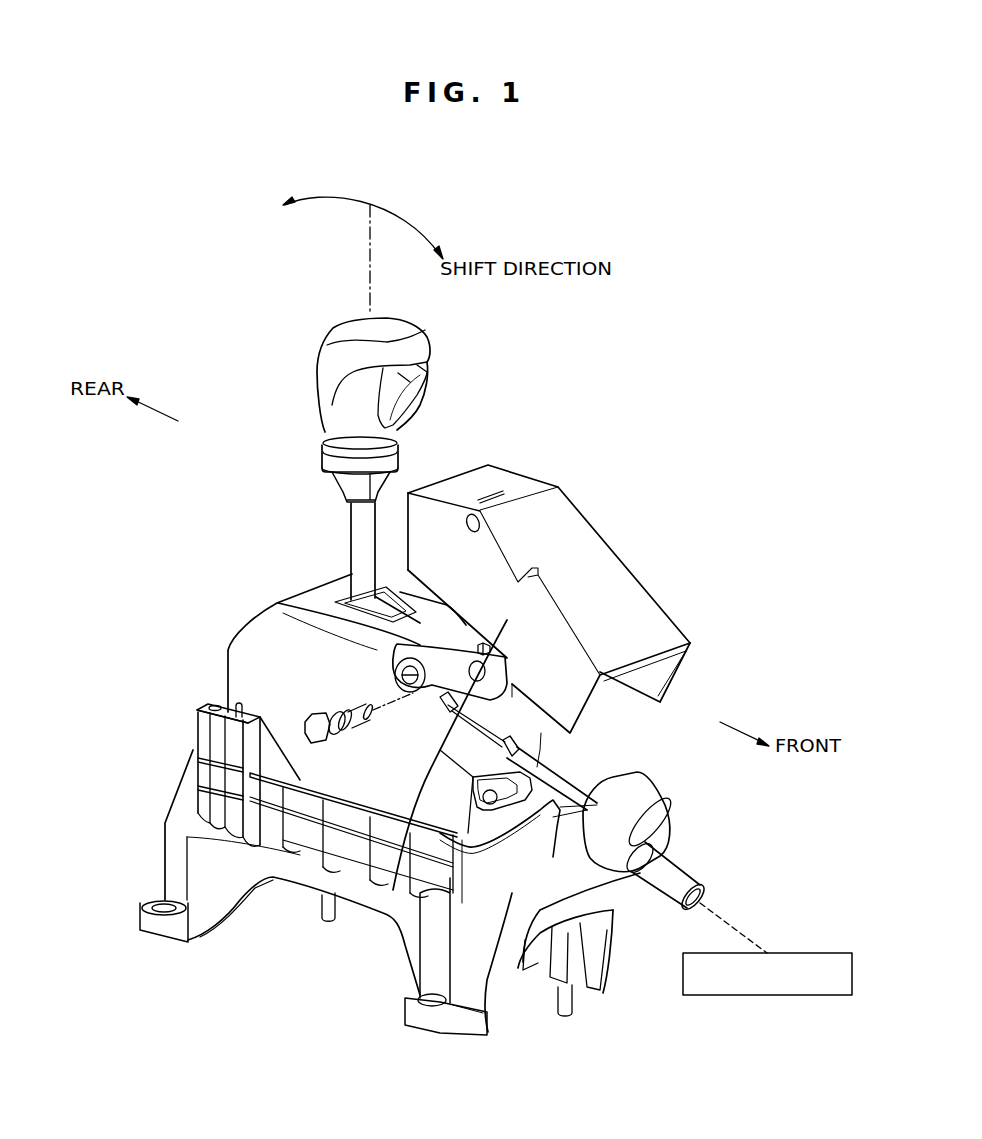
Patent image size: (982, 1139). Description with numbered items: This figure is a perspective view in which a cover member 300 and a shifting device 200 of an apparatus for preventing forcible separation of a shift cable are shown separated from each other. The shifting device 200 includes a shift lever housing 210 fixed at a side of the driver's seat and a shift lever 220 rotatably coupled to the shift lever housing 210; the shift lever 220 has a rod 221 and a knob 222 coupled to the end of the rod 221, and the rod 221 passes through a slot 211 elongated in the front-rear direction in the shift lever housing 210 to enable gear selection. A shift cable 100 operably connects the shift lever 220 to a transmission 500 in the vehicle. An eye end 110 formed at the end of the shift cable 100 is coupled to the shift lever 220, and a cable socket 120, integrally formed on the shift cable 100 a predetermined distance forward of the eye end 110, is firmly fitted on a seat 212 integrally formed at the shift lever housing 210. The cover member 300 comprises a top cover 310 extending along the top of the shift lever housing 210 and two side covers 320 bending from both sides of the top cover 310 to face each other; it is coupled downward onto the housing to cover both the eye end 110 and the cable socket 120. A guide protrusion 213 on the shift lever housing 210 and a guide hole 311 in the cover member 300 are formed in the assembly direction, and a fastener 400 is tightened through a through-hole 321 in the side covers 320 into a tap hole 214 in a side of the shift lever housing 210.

The shift cable 100 is at (527, 879).
The eye end 110 is at (270, 612).
The cable socket 120 is at (658, 815).
The shifting device 200 is at (225, 671).
The shift lever housing 210 is at (343, 867).
The slot 211 is at (340, 600).
The seat 212 is at (585, 790).
The guide protrusion 213 is at (484, 648).
The tap hole 214 is at (490, 672).
The shift lever 220 is at (258, 526).
The rod 221 is at (352, 522).
The knob 222 is at (336, 428).
The cover member 300 is at (622, 543).
The top cover 310 is at (620, 583).
The guide hole 311 is at (481, 498).
The side covers 320 is at (653, 677).
The through-hole 321 is at (480, 521).
The fastener 400 is at (313, 732).
The transmission 500 is at (767, 997).